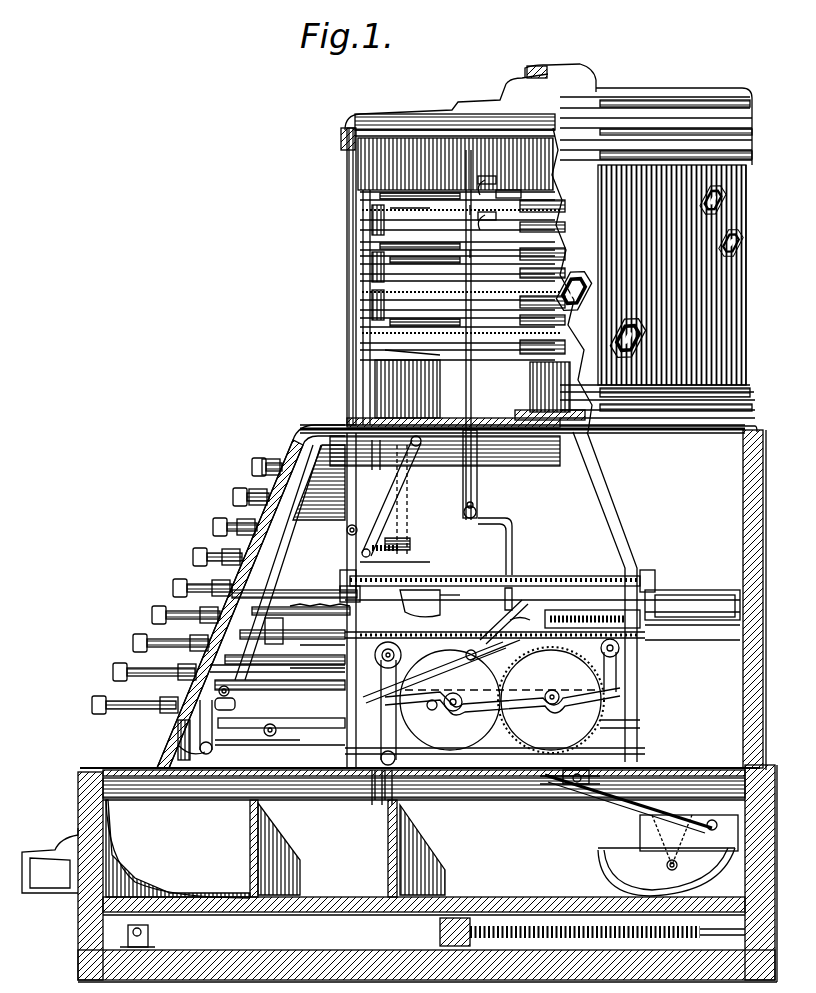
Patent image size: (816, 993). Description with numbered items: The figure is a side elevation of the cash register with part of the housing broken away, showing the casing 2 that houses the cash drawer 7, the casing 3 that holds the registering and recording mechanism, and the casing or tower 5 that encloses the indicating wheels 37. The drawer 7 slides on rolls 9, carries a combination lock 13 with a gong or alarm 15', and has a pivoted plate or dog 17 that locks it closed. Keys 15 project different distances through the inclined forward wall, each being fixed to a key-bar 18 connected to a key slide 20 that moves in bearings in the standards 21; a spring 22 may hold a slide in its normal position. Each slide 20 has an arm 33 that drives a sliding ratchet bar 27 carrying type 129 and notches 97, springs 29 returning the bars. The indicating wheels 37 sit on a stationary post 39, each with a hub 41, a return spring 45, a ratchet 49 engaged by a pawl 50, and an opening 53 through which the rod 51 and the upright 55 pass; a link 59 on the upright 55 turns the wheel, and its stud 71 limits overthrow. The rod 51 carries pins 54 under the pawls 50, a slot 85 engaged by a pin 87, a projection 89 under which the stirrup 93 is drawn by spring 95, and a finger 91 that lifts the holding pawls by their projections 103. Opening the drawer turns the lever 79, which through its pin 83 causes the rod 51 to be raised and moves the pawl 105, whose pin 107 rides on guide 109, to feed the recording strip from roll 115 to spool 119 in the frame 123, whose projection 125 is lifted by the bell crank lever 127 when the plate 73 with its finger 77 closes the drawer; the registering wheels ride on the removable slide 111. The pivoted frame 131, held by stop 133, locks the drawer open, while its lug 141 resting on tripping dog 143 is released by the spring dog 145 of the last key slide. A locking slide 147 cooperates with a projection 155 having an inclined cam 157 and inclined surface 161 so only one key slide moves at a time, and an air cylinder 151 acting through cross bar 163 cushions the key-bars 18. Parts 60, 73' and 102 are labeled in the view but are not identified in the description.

The casing 2 is at (78, 945).
The casing 3 is at (742, 478).
The casing or tower 5 is at (347, 190).
The cash drawer 7 is at (78, 815).
The rolls 9 is at (142, 935).
The combination lock 13 is at (60, 880).
The keys 15 is at (177, 586).
The gong or alarm 15' is at (647, 869).
The pivoted plate or dog 17 is at (675, 812).
The key-bar 18 is at (312, 515).
The key slide 20 is at (285, 593).
The standards 21 is at (317, 683).
The spring 22 is at (560, 576).
The sliding ratchet bars 27 is at (456, 607).
The springs 29 is at (575, 618).
The projecting arm 33 is at (412, 598).
The indicating wheels 37 is at (360, 218).
The stationary post or shaft 39 is at (440, 338).
The hub 41 is at (455, 176).
The springs 45 is at (560, 208).
The ratchet 49 is at (500, 194).
The pawl or dog 50 is at (470, 210).
The rod 51 is at (495, 298).
The opening 53 is at (360, 478).
The pins 54 is at (478, 178).
The upright or rod 55 is at (360, 232).
The link 59 is at (382, 198).
The bar 60 is at (460, 197).
The lug or stud 71 is at (485, 918).
The plate 73 is at (424, 856).
The bar 73' is at (156, 740).
The projection or finger 77 is at (610, 826).
The lever 79 is at (380, 800).
The pin 83 is at (315, 738).
The slot 85 is at (495, 515).
The pin 87 is at (478, 500).
The projection 89 is at (405, 558).
The finger 91 is at (350, 600).
The stirrup or frame 93 is at (422, 492).
The spring 95 is at (372, 548).
The notches 97 is at (320, 612).
The link 102 is at (495, 674).
The projection 103 is at (500, 650).
The pawl 105 is at (510, 615).
The pin 107 is at (510, 593).
The stationary guide 109 is at (515, 620).
The slide or drawer 111 is at (372, 655).
The roll 115 is at (502, 700).
The spool 119 is at (551, 700).
The frame 123 is at (430, 705).
The projection 125 is at (395, 738).
The bell crank lever 127 is at (368, 800).
The type 129 is at (320, 648).
The pivoted frame 131 is at (310, 715).
The pivoted stop 133 is at (236, 711).
The pin or lug 141 is at (258, 740).
The tripping dog 143 is at (180, 745).
The spring dog 145 is at (272, 688).
The slide or frame 147 is at (712, 595).
The air cylinder 151 is at (650, 648).
The projection 155 is at (640, 592).
The inclined cam 157 is at (277, 682).
The inclined surface 161 is at (295, 650).
The cross bar 163 is at (280, 608).